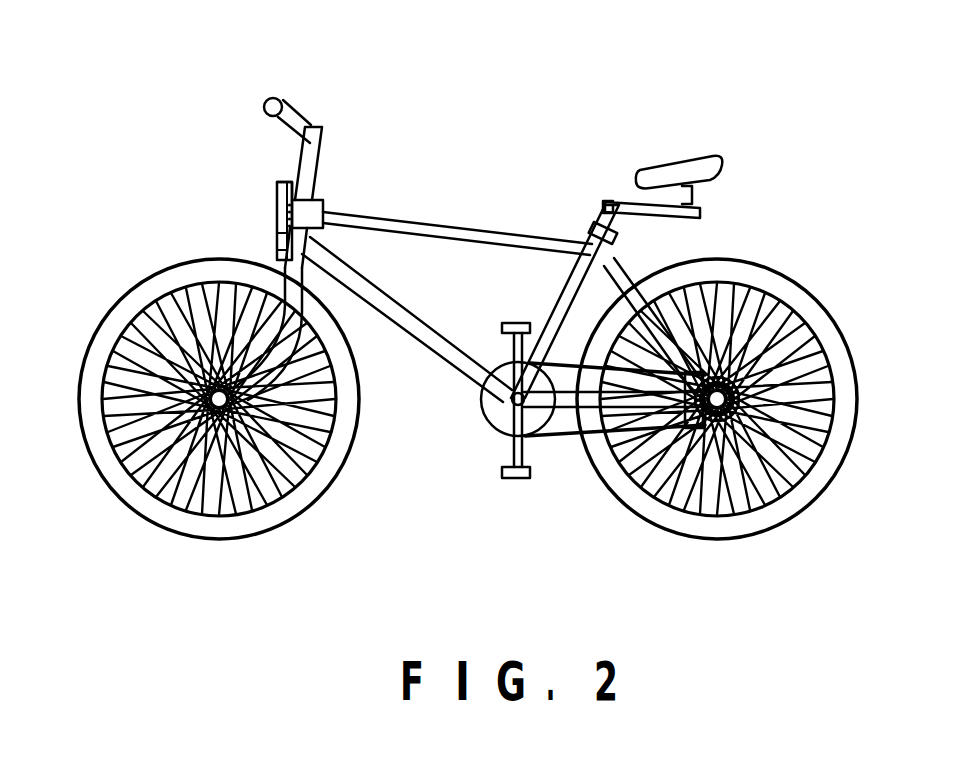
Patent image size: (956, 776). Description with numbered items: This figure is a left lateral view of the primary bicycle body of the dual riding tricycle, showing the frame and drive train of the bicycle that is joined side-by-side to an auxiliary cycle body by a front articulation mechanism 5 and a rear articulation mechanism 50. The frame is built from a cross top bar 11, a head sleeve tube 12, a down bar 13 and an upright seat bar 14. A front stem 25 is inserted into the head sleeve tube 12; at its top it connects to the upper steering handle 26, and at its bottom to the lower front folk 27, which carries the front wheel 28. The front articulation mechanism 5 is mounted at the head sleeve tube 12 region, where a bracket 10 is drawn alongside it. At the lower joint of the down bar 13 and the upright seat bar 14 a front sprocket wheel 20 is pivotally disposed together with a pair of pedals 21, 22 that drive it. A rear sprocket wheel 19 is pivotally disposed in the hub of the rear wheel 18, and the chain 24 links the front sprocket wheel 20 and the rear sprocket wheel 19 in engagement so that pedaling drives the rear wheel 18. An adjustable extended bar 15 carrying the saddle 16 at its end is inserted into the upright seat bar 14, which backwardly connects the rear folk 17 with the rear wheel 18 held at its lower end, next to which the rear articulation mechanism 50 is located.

The front articulation mechanism 5 is at (288, 188).
The bracket body 10 is at (287, 213).
The cross top bar 11 is at (430, 232).
The head sleeve tube 12 is at (305, 199).
The down bar 13 is at (395, 307).
The upright seat bar 14 is at (573, 293).
The adjustable extended bar 15 is at (618, 200).
The saddle 16 is at (690, 170).
The rear folk 17 is at (618, 285).
The rear wheel 18 is at (790, 292).
The rear sprocket wheel 19 is at (735, 512).
The front sprocket wheel 20 is at (484, 398).
The pedal 21 is at (508, 478).
The pedal 22 is at (503, 326).
The chain 24 is at (566, 436).
The front stem 25 is at (305, 162).
The upper steering handle 26 is at (273, 98).
The lower front folk 27 is at (153, 277).
The front wheel 28 is at (100, 327).
The rear articulation mechanism 50 is at (688, 448).